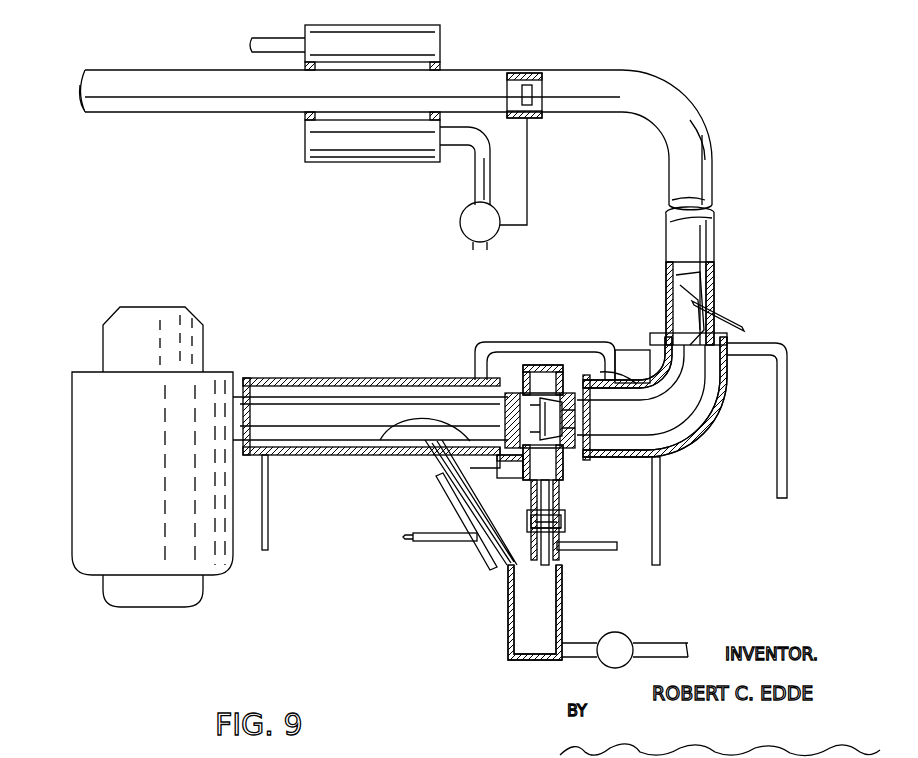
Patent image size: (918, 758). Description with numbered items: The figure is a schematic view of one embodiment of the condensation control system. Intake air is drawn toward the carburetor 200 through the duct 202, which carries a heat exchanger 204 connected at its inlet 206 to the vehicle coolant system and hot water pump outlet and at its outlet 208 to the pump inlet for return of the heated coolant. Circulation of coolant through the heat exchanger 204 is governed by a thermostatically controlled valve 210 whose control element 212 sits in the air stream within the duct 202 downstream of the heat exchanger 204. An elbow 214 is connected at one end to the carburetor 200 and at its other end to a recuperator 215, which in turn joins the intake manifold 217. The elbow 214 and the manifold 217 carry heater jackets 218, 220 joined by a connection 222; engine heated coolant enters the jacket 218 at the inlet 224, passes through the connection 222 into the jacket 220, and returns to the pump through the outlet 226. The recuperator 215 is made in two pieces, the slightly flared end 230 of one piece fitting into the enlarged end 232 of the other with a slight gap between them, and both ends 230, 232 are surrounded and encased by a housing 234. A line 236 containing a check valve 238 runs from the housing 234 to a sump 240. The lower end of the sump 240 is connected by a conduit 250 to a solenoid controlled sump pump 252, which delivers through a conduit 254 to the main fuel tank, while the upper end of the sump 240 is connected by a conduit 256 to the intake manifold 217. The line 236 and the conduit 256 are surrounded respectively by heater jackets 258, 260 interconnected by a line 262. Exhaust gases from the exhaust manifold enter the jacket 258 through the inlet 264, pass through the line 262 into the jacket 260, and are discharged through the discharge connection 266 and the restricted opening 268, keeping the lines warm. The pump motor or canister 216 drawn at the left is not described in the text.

The carburetor 200 is at (743, 306).
The duct 202 is at (675, 93).
The heat exchanger 204 is at (440, 46).
The inlet 206 is at (272, 28).
The outlet 208 is at (474, 184).
The thermostatically controlled valve 210 is at (461, 233).
The element 212 is at (532, 89).
The elbow 214 is at (700, 440).
The recuperator 215 is at (553, 385).
The pump motor 216 is at (80, 384).
The intake manifold 217 is at (418, 396).
The heater jacket 218 is at (345, 377).
The heater jacket 220 is at (632, 380).
The connection 222 is at (560, 343).
The inlet 224 is at (268, 540).
The outlet 226 is at (790, 455).
The flared end 230 is at (565, 465).
The enlarged end 232 is at (535, 383).
The housing 234 is at (560, 392).
The line 236 is at (565, 517).
The check valve 238 is at (565, 531).
The sump 240 is at (508, 638).
The conduit 250 is at (585, 643).
The solenoid controlled sump pump 252 is at (630, 640).
The conduit 254 is at (688, 648).
The conduit 256 is at (437, 462).
The heater jacket 258 is at (560, 495).
The heater jacket 260 is at (452, 503).
The line 262 is at (517, 488).
The inlet 264 is at (600, 552).
The discharge connection 266 is at (447, 545).
The restricted opening 268 is at (408, 541).